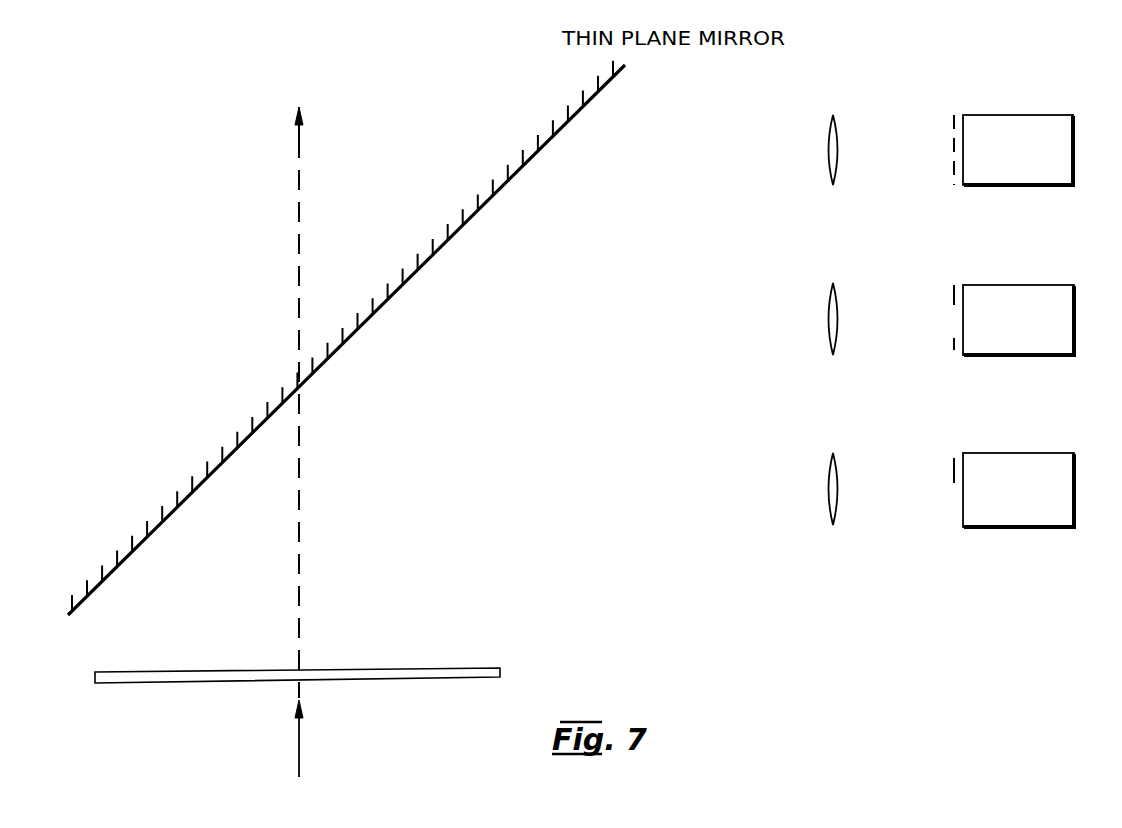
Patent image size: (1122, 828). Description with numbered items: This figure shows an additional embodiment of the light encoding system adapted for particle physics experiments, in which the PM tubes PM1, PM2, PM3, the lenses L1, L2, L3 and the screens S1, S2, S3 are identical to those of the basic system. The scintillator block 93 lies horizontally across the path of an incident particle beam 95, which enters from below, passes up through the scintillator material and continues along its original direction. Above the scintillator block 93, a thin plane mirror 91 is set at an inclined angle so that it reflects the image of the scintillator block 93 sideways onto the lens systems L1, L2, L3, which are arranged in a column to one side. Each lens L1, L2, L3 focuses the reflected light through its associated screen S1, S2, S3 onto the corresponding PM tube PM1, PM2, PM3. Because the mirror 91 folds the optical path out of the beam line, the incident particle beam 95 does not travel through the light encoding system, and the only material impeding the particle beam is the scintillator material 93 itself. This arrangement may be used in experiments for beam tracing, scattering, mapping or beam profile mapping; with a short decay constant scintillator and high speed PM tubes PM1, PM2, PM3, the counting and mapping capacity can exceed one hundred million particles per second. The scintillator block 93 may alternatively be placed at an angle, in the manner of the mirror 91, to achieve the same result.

The thin plane mirror 91 is at (540, 150).
The scintillator block 93 is at (400, 668).
The incident particle beam 95 is at (299, 728).
The lens L1 is at (838, 162).
The lens L2 is at (838, 333).
The lens L3 is at (838, 503).
The screen S1 is at (953, 471).
The screen S2 is at (953, 297).
The screen S3 is at (953, 125).
The PM tube PM1 is at (1018, 490).
The PM tube PM2 is at (1018, 320).
The PM tube PM3 is at (1018, 150).